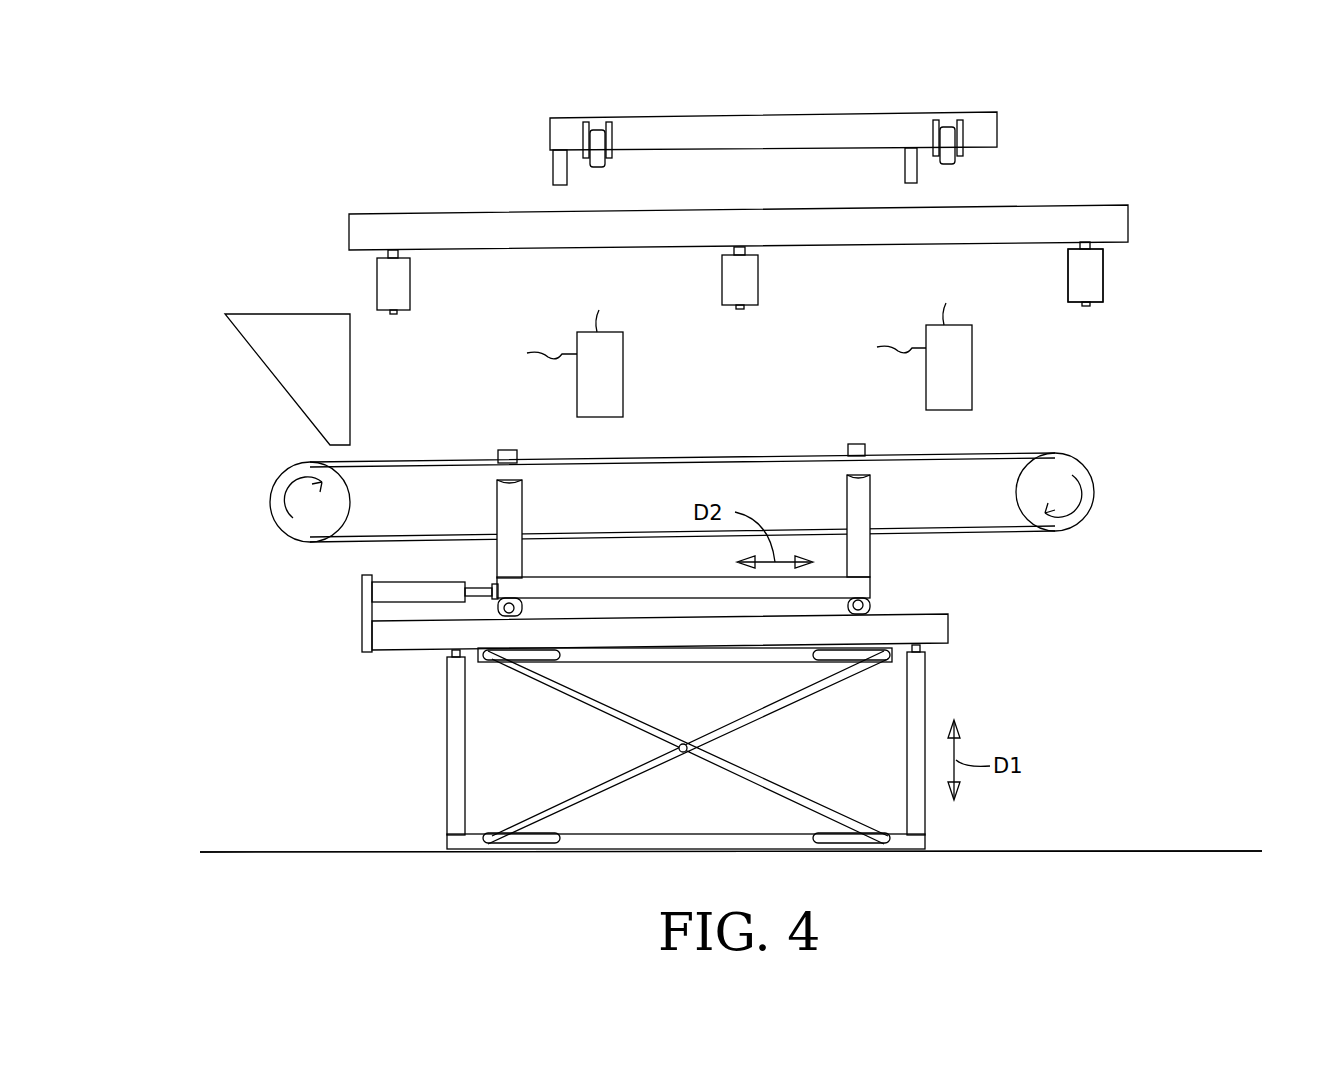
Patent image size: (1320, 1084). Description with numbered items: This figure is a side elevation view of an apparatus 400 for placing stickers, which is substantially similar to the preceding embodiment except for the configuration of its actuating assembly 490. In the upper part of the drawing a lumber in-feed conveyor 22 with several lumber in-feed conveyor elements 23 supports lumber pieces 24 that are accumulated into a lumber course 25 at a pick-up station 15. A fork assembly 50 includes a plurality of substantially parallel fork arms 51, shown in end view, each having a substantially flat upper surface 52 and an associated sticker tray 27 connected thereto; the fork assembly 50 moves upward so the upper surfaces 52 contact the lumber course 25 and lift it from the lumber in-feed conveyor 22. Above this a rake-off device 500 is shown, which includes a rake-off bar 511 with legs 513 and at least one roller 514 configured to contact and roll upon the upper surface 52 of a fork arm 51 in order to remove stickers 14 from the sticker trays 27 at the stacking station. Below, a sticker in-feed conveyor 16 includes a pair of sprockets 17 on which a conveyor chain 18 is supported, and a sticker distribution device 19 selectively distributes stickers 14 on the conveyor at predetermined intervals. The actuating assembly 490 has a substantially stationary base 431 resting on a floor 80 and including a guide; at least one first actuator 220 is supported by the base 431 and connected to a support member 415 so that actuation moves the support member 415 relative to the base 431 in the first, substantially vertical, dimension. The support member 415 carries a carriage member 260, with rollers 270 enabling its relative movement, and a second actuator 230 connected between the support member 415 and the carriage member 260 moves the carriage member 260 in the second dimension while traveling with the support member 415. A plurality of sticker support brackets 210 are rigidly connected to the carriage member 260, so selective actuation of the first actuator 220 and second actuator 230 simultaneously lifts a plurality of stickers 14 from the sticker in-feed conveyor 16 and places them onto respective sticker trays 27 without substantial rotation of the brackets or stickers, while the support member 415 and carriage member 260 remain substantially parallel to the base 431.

The apparatus 400 is at (228, 138).
The rake-off device 500 is at (983, 100).
The rake-off bar 511 is at (795, 128).
The support leg 513 is at (553, 175).
The roller 514 is at (603, 165).
The lumber course 25 is at (1118, 190).
The lumber pieces 24 is at (443, 214).
The lumber in-feed conveyor elements 23 is at (377, 280).
The lumber in-feed conveyor 22 is at (1122, 293).
The fork assembly 50 is at (988, 350).
The fork arms 51 is at (623, 396).
The upper surface 52 is at (775, 305).
The sticker tray 27 is at (707, 350).
The pick-up station 15 is at (755, 364).
The sticker distribution device 19 is at (287, 382).
The sticker in-feed conveyor 16 is at (1115, 476).
The conveyor chain 18 is at (400, 463).
The sprockets 17 is at (272, 502).
The stickers 14 is at (505, 450).
The sticker support bracket 210 is at (517, 505).
The carriage member 260 is at (696, 577).
The second actuator 230 is at (465, 582).
The rollers 270 is at (868, 605).
The actuating assembly 490 is at (372, 707).
The support member 415 is at (413, 641).
The first actuator 220 is at (447, 765).
The stationary base 431 is at (665, 758).
The floor 80 is at (1033, 848).